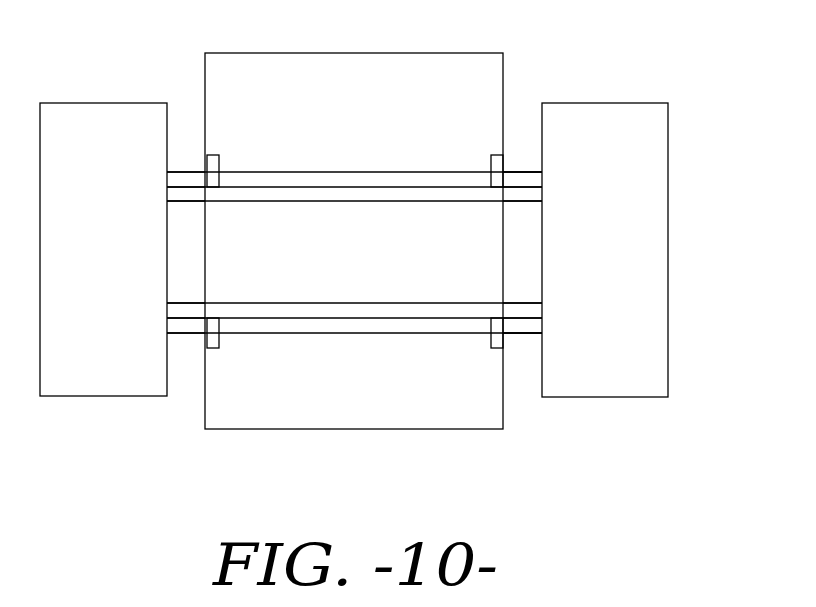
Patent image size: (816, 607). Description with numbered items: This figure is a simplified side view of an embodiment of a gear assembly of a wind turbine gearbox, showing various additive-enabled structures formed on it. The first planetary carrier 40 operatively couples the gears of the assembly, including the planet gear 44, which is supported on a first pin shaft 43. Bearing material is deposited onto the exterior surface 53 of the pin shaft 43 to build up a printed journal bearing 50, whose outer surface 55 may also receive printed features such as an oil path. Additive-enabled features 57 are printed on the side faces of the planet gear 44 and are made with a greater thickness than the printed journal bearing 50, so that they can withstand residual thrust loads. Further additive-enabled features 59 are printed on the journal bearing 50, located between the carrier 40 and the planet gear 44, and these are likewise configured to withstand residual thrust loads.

The first planetary carrier 40 is at (104, 400).
The first pin shaft 43 is at (528, 237).
The planet gear 44 is at (368, 107).
The journal bearing 50 is at (408, 310).
The exterior surface 53 is at (337, 303).
The outer surface 55 is at (270, 318).
The additive-enabled features 57 is at (220, 155).
The additive-enabled features 59 is at (187, 170).